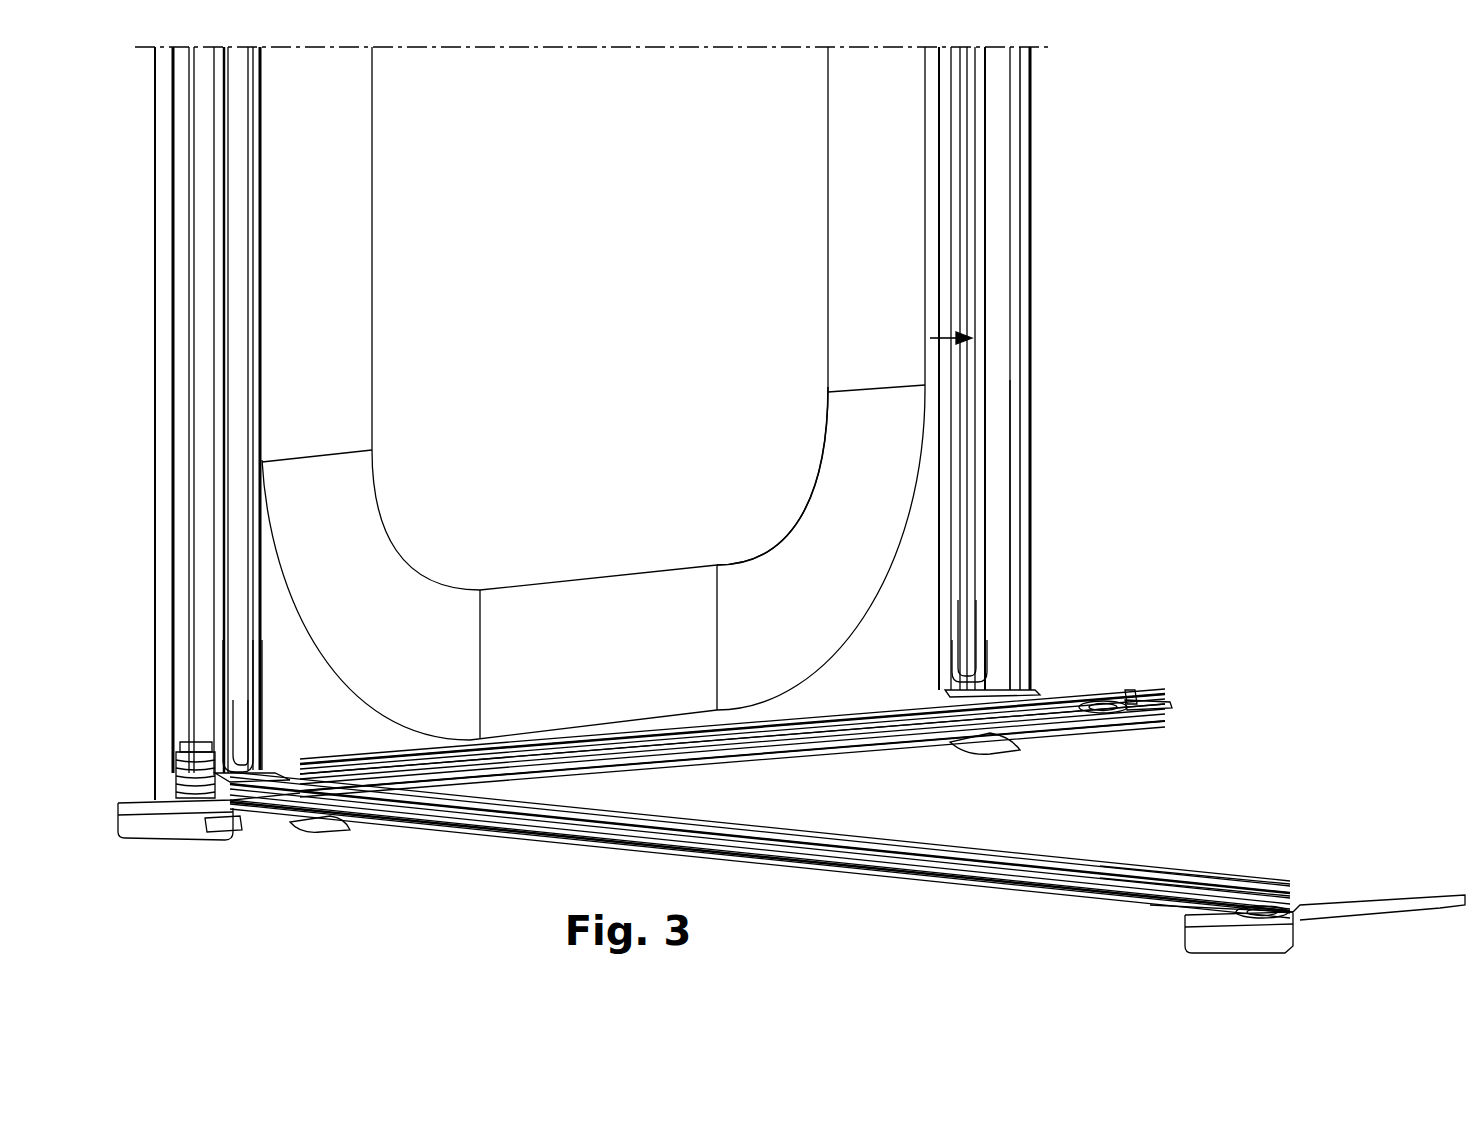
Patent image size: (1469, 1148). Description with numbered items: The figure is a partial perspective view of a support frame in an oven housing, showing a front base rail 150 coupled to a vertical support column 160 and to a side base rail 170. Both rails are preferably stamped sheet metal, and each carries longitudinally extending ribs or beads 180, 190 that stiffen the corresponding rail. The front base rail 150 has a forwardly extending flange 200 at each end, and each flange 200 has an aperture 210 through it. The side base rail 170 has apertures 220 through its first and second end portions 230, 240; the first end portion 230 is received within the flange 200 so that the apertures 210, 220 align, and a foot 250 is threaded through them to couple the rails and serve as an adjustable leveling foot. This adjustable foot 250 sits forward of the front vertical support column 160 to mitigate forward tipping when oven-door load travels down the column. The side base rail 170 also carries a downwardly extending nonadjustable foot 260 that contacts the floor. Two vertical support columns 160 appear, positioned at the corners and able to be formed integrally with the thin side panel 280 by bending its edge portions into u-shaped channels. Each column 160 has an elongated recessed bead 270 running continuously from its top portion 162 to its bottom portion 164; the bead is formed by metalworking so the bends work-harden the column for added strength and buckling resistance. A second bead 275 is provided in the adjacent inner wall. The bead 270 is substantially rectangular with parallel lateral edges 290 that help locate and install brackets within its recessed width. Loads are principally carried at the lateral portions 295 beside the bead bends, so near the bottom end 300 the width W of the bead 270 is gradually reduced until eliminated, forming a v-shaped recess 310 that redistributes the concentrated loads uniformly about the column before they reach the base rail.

The front base rail 150 is at (540, 842).
The vertical support column 160 is at (262, 112).
The top portion 162 is at (185, 106).
The bottom portion 164 is at (263, 681).
The side base rail 170 is at (890, 738).
The rib or bead 180 is at (1108, 866).
The rib or bead 190 is at (780, 740).
The forwardly extending flange 200 is at (138, 818).
The aperture 210 is at (1262, 910).
The aperture 220 is at (1108, 698).
The first end portion 230 is at (238, 834).
The second end portion 240 is at (1163, 712).
The foot 250 is at (178, 765).
The nonadjustable foot 260 is at (313, 832).
The bead 270 is at (235, 212).
The second bead 275 is at (952, 465).
The side panel 280 is at (553, 255).
The lateral edges 290 is at (225, 598).
The lateral portions 295 is at (222, 398).
The bottom end 300 is at (274, 762).
The v-shaped recess 310 is at (1013, 661).
The width W is at (1003, 330).